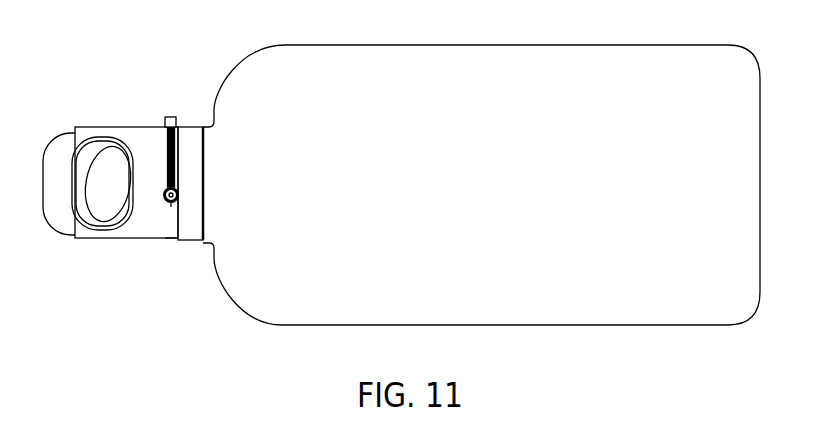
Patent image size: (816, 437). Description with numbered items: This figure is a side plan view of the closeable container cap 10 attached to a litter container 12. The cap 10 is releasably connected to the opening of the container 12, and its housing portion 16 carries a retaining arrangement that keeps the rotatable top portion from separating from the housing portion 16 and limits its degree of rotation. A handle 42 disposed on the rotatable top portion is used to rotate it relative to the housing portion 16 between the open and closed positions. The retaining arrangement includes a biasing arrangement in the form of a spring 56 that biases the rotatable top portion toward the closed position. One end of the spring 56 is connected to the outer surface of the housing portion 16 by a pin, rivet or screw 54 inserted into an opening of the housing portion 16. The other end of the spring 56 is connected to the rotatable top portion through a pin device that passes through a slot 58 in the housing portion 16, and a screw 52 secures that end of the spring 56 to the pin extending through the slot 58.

The closeable container cap 10 is at (66, 46).
The litter container 12 is at (343, 44).
The housing portion 16 is at (93, 127).
The handle 42 is at (58, 232).
The screw 52 is at (167, 206).
The pin, rivet or screw 54 is at (174, 117).
The spring 56 is at (167, 143).
The slot 58 is at (168, 242).